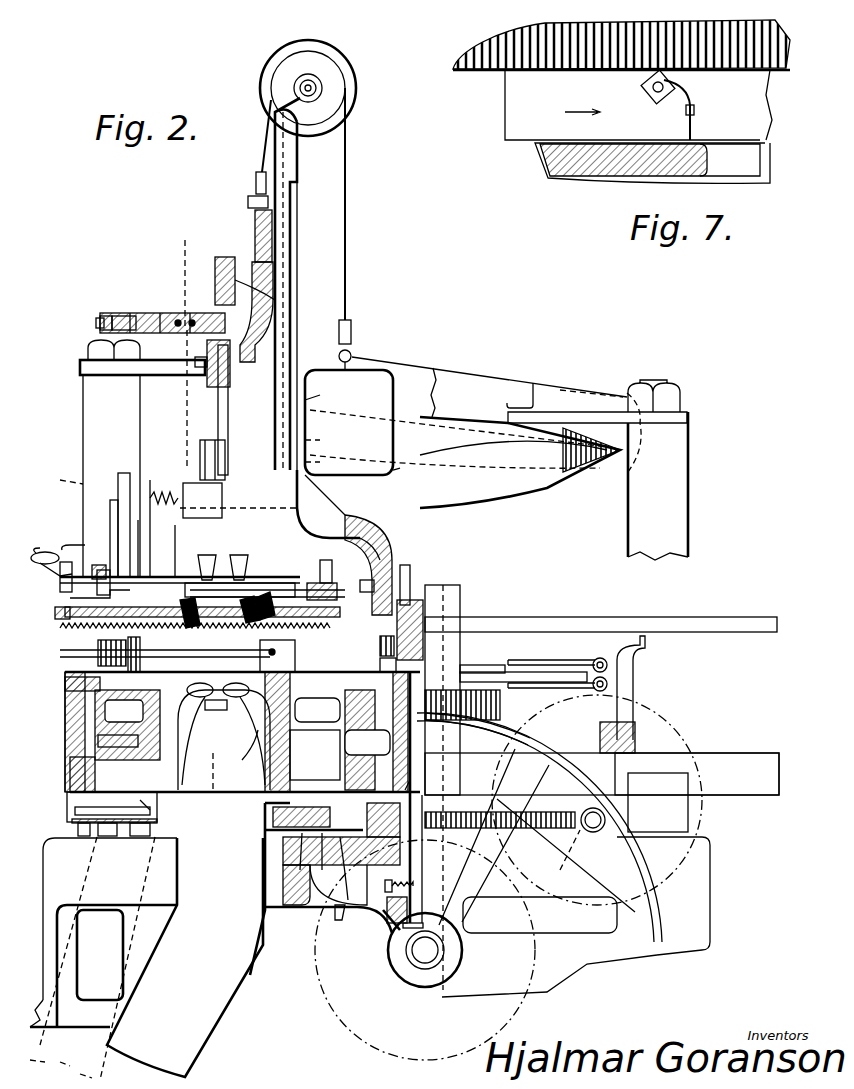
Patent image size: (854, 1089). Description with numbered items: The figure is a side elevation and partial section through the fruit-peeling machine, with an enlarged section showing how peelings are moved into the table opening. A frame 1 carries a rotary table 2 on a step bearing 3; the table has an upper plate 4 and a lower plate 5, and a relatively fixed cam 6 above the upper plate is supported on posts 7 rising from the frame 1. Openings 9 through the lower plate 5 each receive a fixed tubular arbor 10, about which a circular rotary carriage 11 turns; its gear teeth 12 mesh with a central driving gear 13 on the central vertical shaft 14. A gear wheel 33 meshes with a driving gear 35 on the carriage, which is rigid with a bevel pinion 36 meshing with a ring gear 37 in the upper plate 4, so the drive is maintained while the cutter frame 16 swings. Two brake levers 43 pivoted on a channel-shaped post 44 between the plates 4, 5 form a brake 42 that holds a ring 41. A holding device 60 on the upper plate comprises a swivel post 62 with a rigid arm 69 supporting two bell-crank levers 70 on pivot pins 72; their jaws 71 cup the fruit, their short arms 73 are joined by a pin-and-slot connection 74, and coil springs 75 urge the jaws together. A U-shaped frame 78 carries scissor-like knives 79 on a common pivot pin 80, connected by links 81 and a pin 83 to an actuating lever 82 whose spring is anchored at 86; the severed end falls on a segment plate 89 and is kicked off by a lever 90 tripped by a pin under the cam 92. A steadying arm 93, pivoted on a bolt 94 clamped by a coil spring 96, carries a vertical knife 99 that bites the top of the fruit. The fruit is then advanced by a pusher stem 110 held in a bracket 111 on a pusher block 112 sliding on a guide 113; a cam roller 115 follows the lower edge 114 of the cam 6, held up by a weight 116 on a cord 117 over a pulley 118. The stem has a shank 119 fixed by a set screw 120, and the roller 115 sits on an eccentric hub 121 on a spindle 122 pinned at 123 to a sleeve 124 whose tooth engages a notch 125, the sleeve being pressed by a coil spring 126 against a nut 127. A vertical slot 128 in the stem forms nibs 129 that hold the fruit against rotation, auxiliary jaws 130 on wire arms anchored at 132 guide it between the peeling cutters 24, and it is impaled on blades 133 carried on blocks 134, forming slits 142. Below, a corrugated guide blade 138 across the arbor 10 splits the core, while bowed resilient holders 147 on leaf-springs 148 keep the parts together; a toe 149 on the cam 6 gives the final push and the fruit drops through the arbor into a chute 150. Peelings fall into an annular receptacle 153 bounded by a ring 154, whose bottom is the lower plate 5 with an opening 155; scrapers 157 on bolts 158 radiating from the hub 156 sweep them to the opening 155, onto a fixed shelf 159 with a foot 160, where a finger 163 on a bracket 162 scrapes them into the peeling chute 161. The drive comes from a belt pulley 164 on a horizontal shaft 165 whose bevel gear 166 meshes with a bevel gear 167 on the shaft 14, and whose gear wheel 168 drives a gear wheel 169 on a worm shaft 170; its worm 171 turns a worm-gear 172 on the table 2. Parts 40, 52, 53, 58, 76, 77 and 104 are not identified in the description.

In FIG. 2, the frame 1 is at (700, 890).
In FIG. 7, the rotary table 2 is at (780, 143).
In FIG. 2, the rotary table 2 is at (754, 753).
In FIG. 2, the step bearing 3 is at (177, 247).
In FIG. 2, the upper plate 4 is at (750, 620).
In FIG. 7, the lower plate 5 is at (565, 176).
In FIG. 2, the lower plate 5 is at (712, 750).
In FIG. 2, the cam 6 is at (478, 380).
In FIG. 2, the posts 7 is at (88, 383).
In FIG. 2, the openings 9 is at (205, 795).
In FIG. 2, the tubular arbor 10 is at (252, 795).
In FIG. 7, the rotary carriage 11 is at (482, 78).
In FIG. 2, the rotary carriage 11 is at (65, 670).
In FIG. 7, the gear teeth 12 is at (775, 50).
In FIG. 2, the gear teeth 12 is at (90, 715).
In FIG. 2, the central driving gear 13 is at (500, 712).
In FIG. 2, the central vertical shaft 14 is at (432, 588).
In FIG. 2, the cutter frame 16 is at (351, 732).
In FIG. 2, the peeling cutters 24 is at (195, 647).
In FIG. 2, the gear wheel 33 is at (95, 650).
In FIG. 2, the driving gear 35 is at (125, 658).
In FIG. 2, the bevel pinion 36 is at (103, 568).
In FIG. 2, the ring gear 37 is at (379, 644).
In FIG. 2, the slide plate 40 is at (190, 598).
In FIG. 2, the ring 41 is at (85, 683).
In FIG. 2, the brake 42 is at (643, 669).
In FIG. 2, the brake levers 43 is at (540, 660).
In FIG. 2, the channel shaped post 44 is at (633, 703).
In FIG. 2, the rings 52 is at (530, 740).
In FIG. 2, the pivot bolts 53 is at (593, 660).
In FIG. 2, the window 58 is at (165, 715).
In FIG. 2, the holding device 60 is at (205, 475).
In FIG. 2, the swivel post 62 is at (285, 500).
In FIG. 2, the arm 69 is at (260, 590).
In FIG. 2, the levers 70 is at (372, 520).
In FIG. 2, the jaws 71 is at (210, 565).
In FIG. 2, the pivot pins 72 is at (378, 538).
In FIG. 2, the short arms 73 is at (375, 560).
In FIG. 2, the pin-and-slot connection 74 is at (376, 578).
In FIG. 2, the coil spring 75 is at (412, 578).
In FIG. 2, the bracket 76 is at (440, 580).
In FIG. 2, the rod 77 is at (139, 570).
In FIG. 2, the U-shaped frame 78 is at (100, 560).
In FIG. 2, the knives 79 is at (200, 603).
In FIG. 2, the pivot pin 80 is at (70, 555).
In FIG. 2, the links 81 is at (72, 586).
In FIG. 2, the actuating lever 82 is at (58, 575).
In FIG. 2, the pin 83 is at (62, 556).
In FIG. 2, the spring anchor 86 is at (46, 562).
In FIG. 2, the segment shaped plate 89 is at (128, 520).
In FIG. 2, the lever 90 is at (110, 596).
In FIG. 2, the cam 92 is at (124, 473).
In FIG. 2, the steadying arm 93 is at (216, 498).
In FIG. 2, the pivot bolt 94 is at (152, 495).
In FIG. 2, the coil spring 96 is at (163, 495).
In FIG. 2, the vertical knife 99 is at (393, 470).
In FIG. 2, the lever 104 is at (200, 470).
In FIG. 2, the pusher stem 110 is at (218, 415).
In FIG. 2, the bracket 111 is at (215, 332).
In FIG. 2, the pusher block 112 is at (255, 231).
In FIG. 2, the guide 113 is at (285, 240).
In FIG. 2, the lower edge 114 is at (205, 270).
In FIG. 2, the cam roller 115 is at (305, 275).
In FIG. 2, the weight 116 is at (370, 380).
In FIG. 2, the cord 117 is at (350, 192).
In FIG. 2, the pulley 118 is at (352, 92).
In FIG. 2, the shank 119 is at (303, 400).
In FIG. 2, the set screw 120 is at (220, 375).
In FIG. 2, the eccentric hub 121 is at (293, 340).
In FIG. 2, the spindle 122 is at (157, 313).
In FIG. 2, the pin 123 is at (178, 330).
In FIG. 2, the sleeve 124 is at (130, 315).
In FIG. 2, the notch 125 is at (187, 240).
In FIG. 2, the coil spring 126 is at (103, 320).
In FIG. 2, the nut 127 is at (96, 322).
In FIG. 2, the vertical slot 128 is at (312, 441).
In FIG. 2, the nibs 129 is at (312, 462).
In FIG. 2, the auxiliary jaws 130 is at (320, 488).
In FIG. 2, the anchoring pin 132 is at (70, 612).
In FIG. 2, the impaling blades 133 is at (212, 700).
In FIG. 2, the blocks 134 is at (176, 572).
In FIG. 2, the guide blade 138 is at (200, 722).
In FIG. 2, the slits 142 is at (340, 754).
In FIG. 2, the resilient holders 147 is at (234, 700).
In FIG. 2, the leaf-springs 148 is at (196, 850).
In FIG. 2, the toe 149 is at (242, 575).
In FIG. 2, the chute 150 is at (225, 995).
In FIG. 2, the annular receptacle 153 is at (348, 900).
In FIG. 2, the annular wall 154 is at (340, 922).
In FIG. 7, the opening 155 is at (740, 165).
In FIG. 2, the opening 155 is at (67, 795).
In FIG. 7, the hub 156 is at (507, 120).
In FIG. 2, the hub 156 is at (265, 872).
In FIG. 7, the scrapers 157 is at (695, 122).
In FIG. 2, the scrapers 157 is at (322, 870).
In FIG. 7, the bolt 158 is at (656, 99).
In FIG. 2, the bolt 158 is at (300, 870).
In FIG. 2, the shelf 159 is at (90, 842).
In FIG. 2, the foot 160 is at (62, 832).
In FIG. 2, the peeling chute 161 is at (65, 885).
In FIG. 2, the fixed bracket 162 is at (147, 842).
In FIG. 2, the finger 163 is at (123, 800).
In FIG. 2, the belt pulley 164 is at (665, 830).
In FIG. 2, the horizontal shaft 165 is at (415, 958).
In FIG. 2, the bevel gear 166 is at (453, 990).
In FIG. 2, the bevel gear 167 is at (385, 886).
In FIG. 2, the gear wheel 168 is at (395, 1030).
In FIG. 2, the gear wheel 169 is at (703, 820).
In FIG. 2, the worm shaft 170 is at (592, 833).
In FIG. 2, the worm 171 is at (562, 870).
In FIG. 2, the worm-gear 172 is at (540, 830).